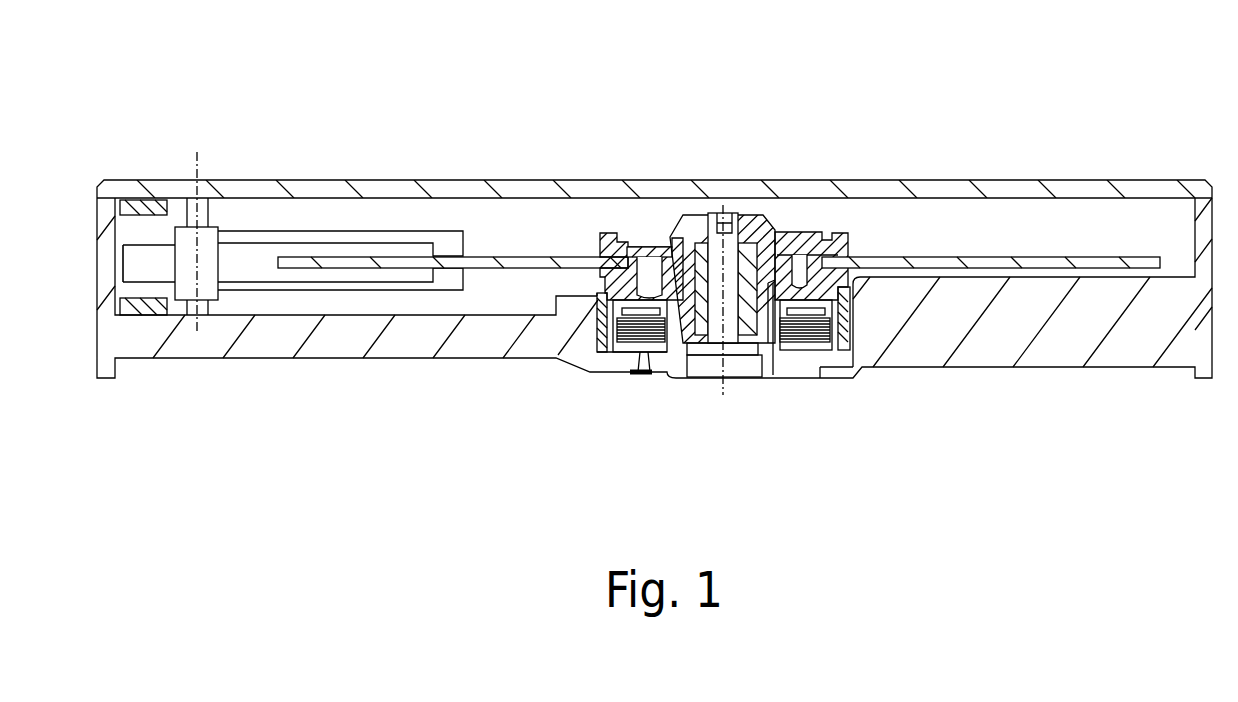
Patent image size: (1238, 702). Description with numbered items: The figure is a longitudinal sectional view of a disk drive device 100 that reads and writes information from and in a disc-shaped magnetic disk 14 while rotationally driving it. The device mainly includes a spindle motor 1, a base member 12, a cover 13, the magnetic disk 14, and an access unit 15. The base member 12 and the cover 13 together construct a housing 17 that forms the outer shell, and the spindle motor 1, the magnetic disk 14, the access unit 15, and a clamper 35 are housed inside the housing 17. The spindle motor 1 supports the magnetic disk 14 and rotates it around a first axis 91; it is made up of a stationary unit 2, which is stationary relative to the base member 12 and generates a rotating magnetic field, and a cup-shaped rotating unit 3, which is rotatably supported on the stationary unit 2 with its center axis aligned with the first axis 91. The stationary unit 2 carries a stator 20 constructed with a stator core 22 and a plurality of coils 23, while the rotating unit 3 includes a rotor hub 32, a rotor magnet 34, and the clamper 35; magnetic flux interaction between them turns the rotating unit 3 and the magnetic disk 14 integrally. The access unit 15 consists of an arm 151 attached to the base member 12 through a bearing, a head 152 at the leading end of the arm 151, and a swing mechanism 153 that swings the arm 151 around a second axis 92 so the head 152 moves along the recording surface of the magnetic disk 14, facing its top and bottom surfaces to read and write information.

The spindle motor 1 is at (723, 208).
The stationary unit 2 is at (612, 381).
The rotating unit 3 is at (738, 284).
The base member 12 is at (1103, 358).
The cover 13 is at (1163, 190).
The magnetic disk 14 is at (1006, 262).
The access unit 15 is at (423, 207).
The housing 17 is at (1103, 177).
The stator 20 is at (737, 397).
The stator core 22 is at (769, 347).
The coils 23 is at (807, 348).
The rotor hub 32 is at (682, 215).
The rotor magnet 34 is at (848, 330).
The clamper 35 is at (850, 237).
The first axis 91 is at (722, 388).
The second axis 92 is at (197, 152).
The disk drive device 100 is at (714, 88).
The arm 151 is at (247, 236).
The head 152 is at (460, 247).
The swing mechanism 153 is at (172, 306).